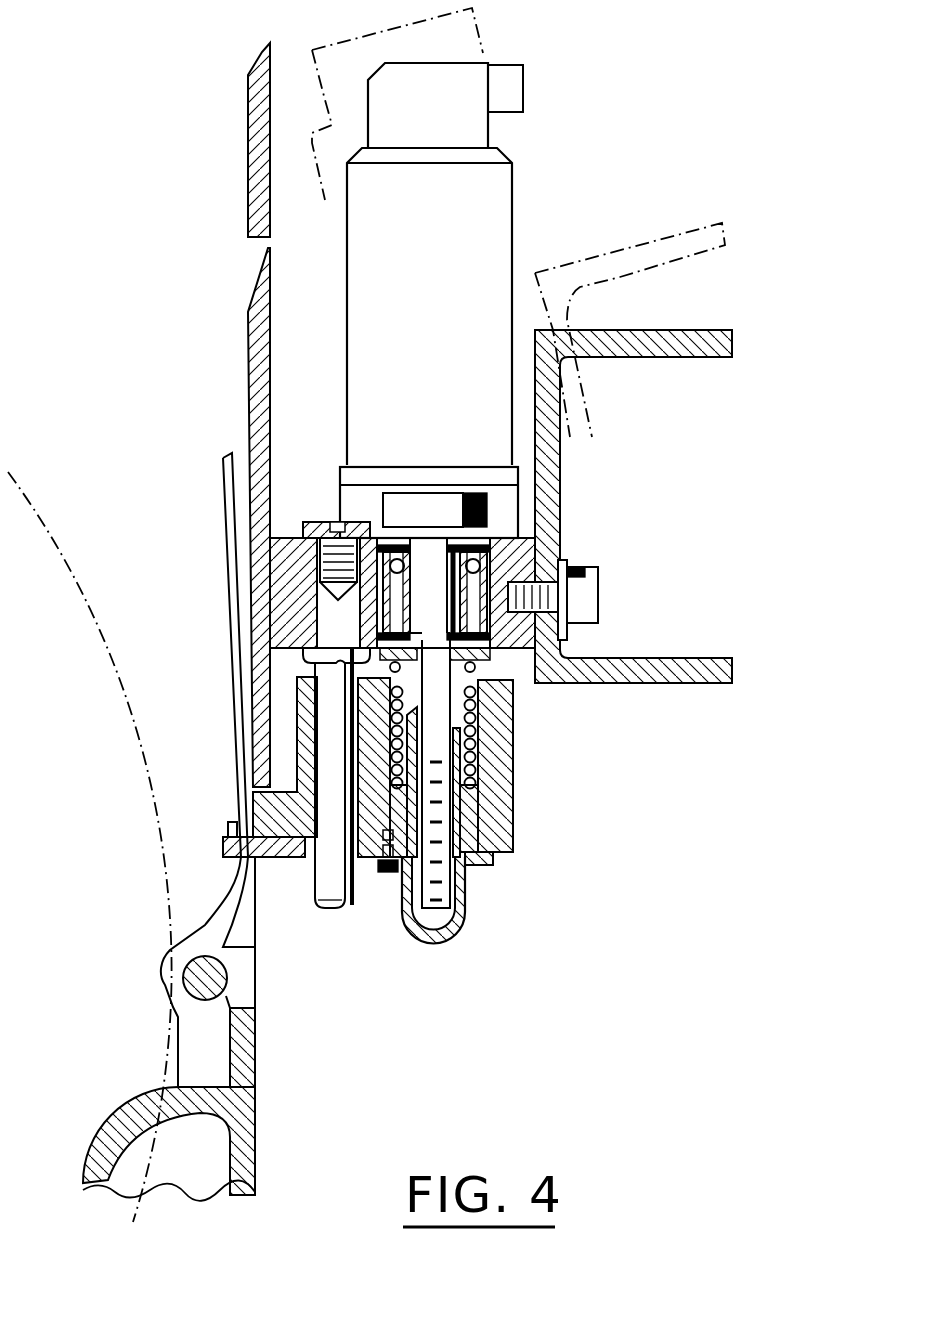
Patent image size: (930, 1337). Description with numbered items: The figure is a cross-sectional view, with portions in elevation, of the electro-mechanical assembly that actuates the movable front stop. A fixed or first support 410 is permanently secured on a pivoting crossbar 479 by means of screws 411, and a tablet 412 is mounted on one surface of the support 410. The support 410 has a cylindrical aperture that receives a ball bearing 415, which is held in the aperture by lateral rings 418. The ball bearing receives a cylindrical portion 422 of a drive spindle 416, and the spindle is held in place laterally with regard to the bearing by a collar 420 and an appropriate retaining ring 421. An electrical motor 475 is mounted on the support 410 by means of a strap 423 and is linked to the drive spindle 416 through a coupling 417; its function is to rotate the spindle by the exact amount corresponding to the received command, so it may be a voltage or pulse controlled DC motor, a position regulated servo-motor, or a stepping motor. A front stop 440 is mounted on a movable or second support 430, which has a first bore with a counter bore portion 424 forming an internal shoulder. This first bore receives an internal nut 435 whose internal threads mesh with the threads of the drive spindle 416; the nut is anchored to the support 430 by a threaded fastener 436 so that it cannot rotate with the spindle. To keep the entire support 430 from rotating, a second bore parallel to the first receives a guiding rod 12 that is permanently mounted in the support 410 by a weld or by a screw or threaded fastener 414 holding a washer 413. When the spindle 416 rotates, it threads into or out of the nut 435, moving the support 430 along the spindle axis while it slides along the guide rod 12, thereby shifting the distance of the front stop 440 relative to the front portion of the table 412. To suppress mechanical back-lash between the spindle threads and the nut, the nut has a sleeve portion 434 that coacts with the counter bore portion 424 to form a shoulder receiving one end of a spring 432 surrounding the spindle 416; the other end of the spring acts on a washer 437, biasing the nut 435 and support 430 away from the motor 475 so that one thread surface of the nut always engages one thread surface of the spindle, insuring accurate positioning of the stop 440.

The guiding rod 12 is at (300, 688).
The fixed support 410 is at (270, 552).
The screws 411 is at (590, 602).
The tablet 412 is at (248, 323).
The washer 413 is at (262, 512).
The threaded fastener 414 is at (280, 462).
The ball bearing 415 is at (485, 568).
The drive spindle 416 is at (450, 882).
The coupling 417 is at (428, 570).
The lateral rings 418 is at (385, 544).
The collar 420 is at (330, 727).
The retaining ring 421 is at (398, 560).
The cylindrical portion 422 is at (432, 490).
The strap 423 is at (492, 500).
The counter bore portion 424 is at (303, 755).
The movable support 430 is at (513, 830).
The spring 432 is at (475, 735).
The sleeve portion 434 is at (507, 822).
The internal nut 435 is at (465, 920).
The threaded fastener 436 is at (387, 877).
The washer 437 is at (500, 660).
The front stop 440 is at (223, 843).
The electrical motor 475 is at (435, 264).
The pivoting crossbar 479 is at (662, 357).